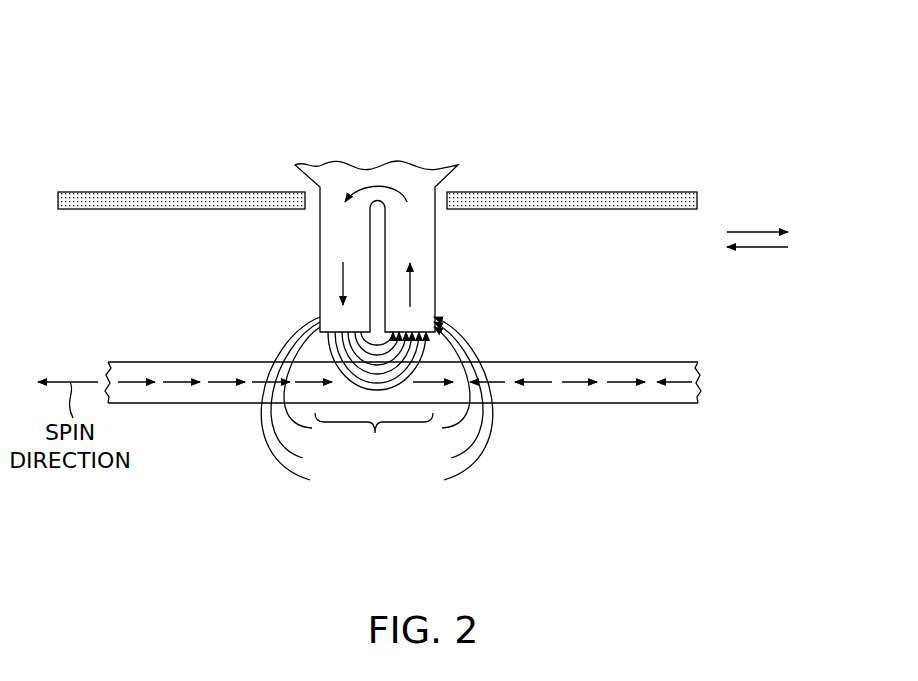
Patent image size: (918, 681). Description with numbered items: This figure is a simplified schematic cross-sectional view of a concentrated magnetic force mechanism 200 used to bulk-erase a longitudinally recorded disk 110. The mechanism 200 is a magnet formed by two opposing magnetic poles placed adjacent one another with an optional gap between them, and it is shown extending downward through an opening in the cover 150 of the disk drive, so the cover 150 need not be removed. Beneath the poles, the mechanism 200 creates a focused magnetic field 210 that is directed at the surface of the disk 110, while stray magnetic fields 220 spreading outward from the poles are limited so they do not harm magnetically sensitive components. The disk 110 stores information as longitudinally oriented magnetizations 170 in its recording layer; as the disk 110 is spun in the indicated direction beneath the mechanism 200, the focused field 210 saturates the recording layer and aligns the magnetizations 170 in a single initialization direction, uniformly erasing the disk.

The disk 110 is at (640, 398).
The cover 150 is at (93, 192).
The magnetizations 170 is at (762, 247).
The concentrated magnetic force mechanism 200 is at (417, 165).
The focused magnetic field 210 is at (374, 427).
The stray magnetic field 220 is at (292, 336).